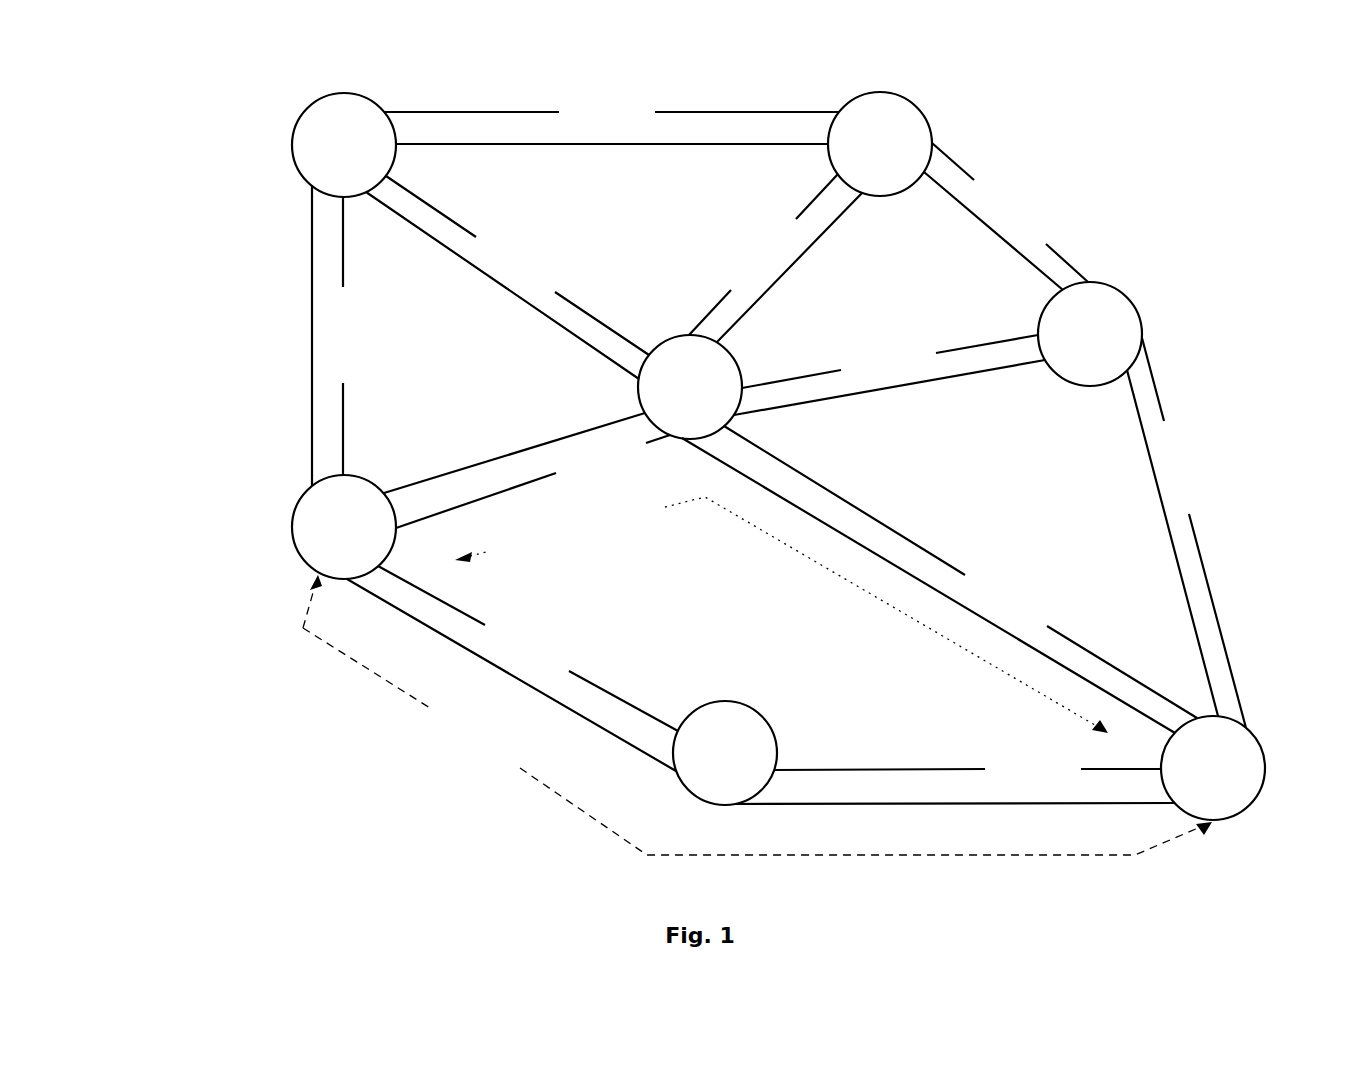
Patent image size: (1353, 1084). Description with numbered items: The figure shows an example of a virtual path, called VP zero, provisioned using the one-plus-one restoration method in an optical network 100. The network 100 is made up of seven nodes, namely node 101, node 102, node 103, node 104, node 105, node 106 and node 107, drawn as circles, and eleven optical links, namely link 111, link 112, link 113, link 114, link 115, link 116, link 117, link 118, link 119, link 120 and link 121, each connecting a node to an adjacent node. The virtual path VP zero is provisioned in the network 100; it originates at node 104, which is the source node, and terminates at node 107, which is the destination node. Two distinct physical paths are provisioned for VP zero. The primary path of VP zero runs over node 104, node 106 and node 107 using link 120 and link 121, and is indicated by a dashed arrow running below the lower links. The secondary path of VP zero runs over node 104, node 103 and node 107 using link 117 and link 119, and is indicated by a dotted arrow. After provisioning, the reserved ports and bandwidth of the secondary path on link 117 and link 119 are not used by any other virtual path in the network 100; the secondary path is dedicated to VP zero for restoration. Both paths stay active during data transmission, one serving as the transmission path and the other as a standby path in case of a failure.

The network 100 is at (178, 100).
The node 101 is at (344, 145).
The node 102 is at (880, 144).
The node 103 is at (690, 387).
The node 104 is at (344, 527).
The node 105 is at (1090, 334).
The node 106 is at (725, 753).
The node 107 is at (1213, 768).
The optical link 111 is at (611, 122).
The optical link 112 is at (507, 277).
The optical link 113 is at (343, 336).
The optical link 114 is at (1006, 216).
The optical link 115 is at (775, 258).
The optical link 116 is at (889, 375).
The optical link 117 is at (527, 470).
The optical link 118 is at (1186, 533).
The optical link 119 is at (939, 579).
The optical link 120 is at (512, 668).
The optical link 121 is at (955, 780).